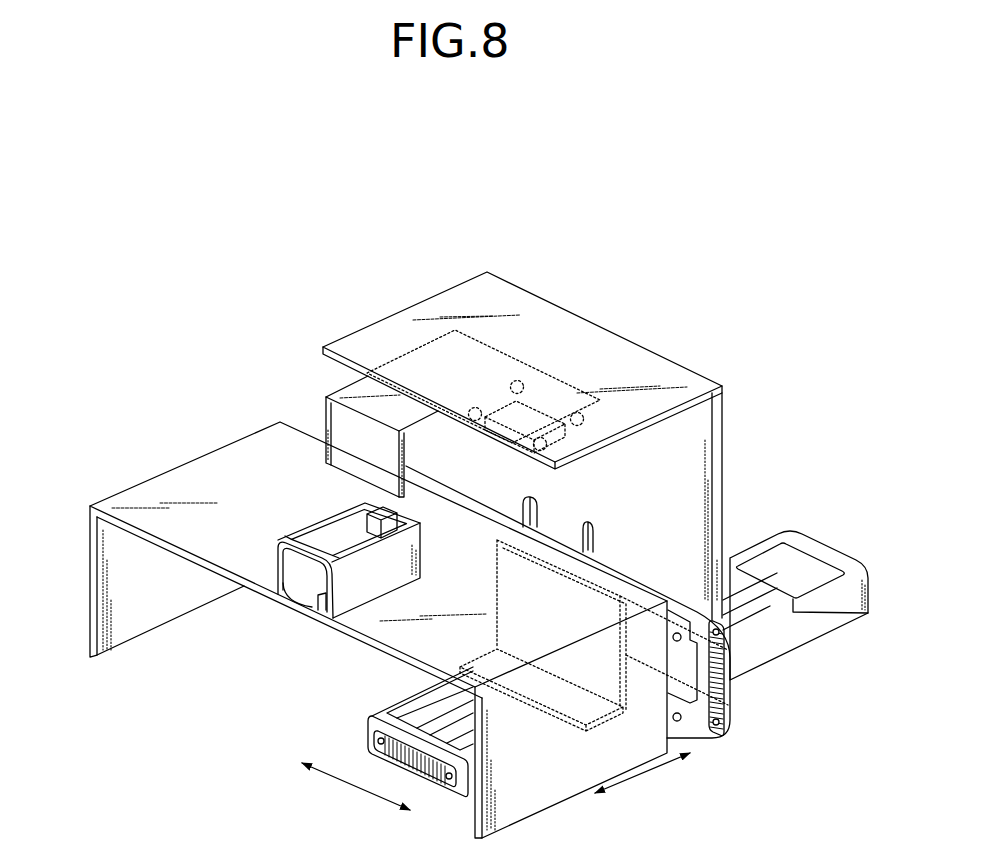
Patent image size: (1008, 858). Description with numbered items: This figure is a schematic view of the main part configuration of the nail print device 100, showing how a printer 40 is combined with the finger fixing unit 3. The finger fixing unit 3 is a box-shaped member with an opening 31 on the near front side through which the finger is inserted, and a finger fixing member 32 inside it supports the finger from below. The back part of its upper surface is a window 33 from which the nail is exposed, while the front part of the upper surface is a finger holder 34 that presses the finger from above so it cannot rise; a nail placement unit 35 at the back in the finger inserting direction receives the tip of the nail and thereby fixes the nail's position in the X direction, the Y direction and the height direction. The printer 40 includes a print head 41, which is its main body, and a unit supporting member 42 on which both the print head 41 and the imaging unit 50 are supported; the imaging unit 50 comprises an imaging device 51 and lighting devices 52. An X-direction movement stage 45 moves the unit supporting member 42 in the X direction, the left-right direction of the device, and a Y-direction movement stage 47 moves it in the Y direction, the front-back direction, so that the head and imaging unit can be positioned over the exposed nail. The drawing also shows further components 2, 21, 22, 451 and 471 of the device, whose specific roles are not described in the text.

The nail print device 100 is at (236, 324).
The circuit board 2 is at (115, 490).
The finger fixing unit 3 is at (290, 523).
The board body 21 is at (217, 568).
The side plate 22 is at (123, 630).
The opening 31 is at (320, 593).
The finger fixing member 32 is at (300, 597).
The window 33 is at (338, 522).
The finger holder 34 is at (310, 548).
The nail placement unit 35 is at (373, 515).
The printer 40 is at (728, 462).
The print head 41 is at (322, 410).
The unit supporting member 42 is at (657, 365).
The X-direction movement stage 45 is at (695, 733).
The engaging projection 451 is at (553, 528).
The Y-direction movement stage 47 is at (823, 632).
The connector tab 471 is at (610, 640).
The imaging unit 50 is at (580, 263).
The imaging device 51 is at (540, 402).
The lighting devices 52 is at (520, 383).